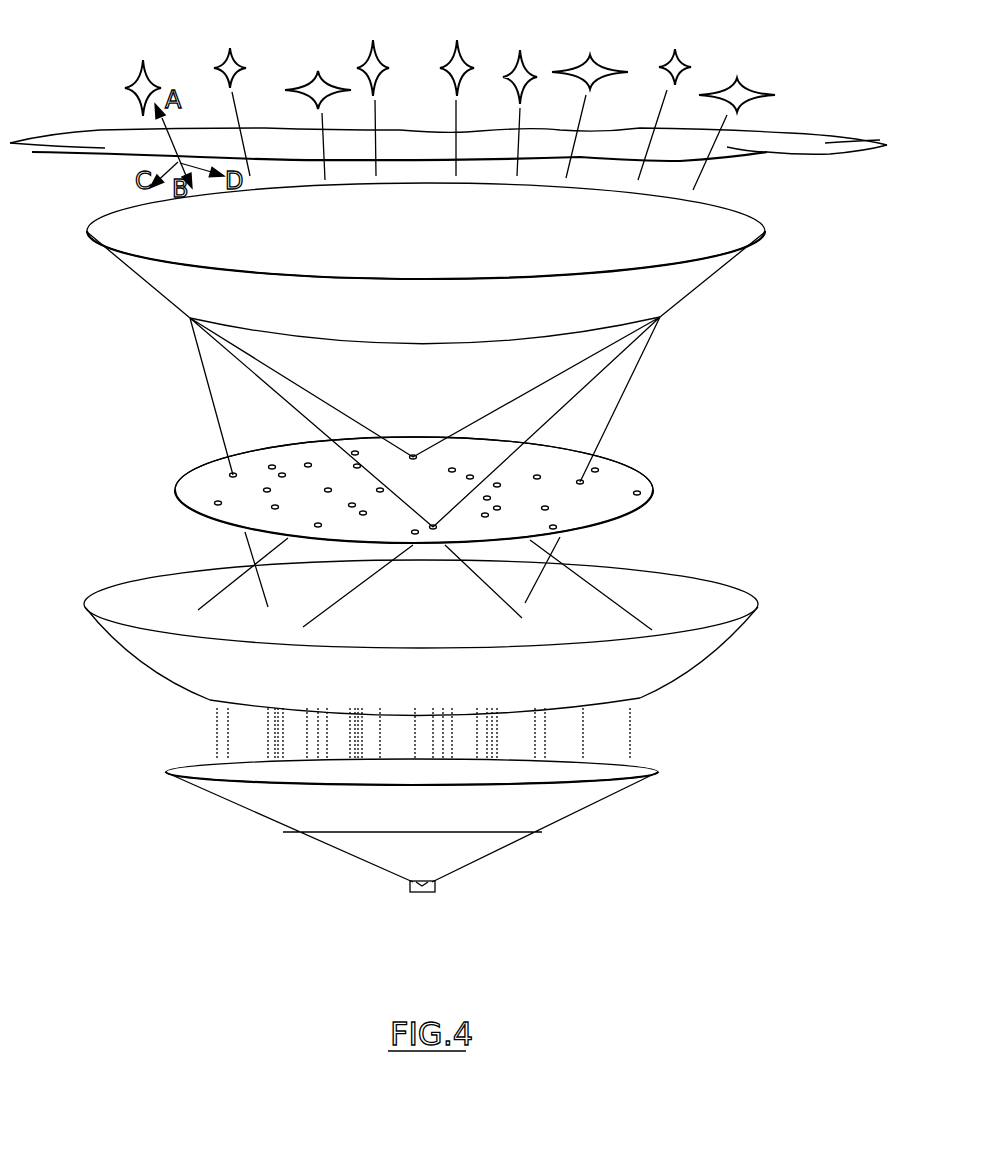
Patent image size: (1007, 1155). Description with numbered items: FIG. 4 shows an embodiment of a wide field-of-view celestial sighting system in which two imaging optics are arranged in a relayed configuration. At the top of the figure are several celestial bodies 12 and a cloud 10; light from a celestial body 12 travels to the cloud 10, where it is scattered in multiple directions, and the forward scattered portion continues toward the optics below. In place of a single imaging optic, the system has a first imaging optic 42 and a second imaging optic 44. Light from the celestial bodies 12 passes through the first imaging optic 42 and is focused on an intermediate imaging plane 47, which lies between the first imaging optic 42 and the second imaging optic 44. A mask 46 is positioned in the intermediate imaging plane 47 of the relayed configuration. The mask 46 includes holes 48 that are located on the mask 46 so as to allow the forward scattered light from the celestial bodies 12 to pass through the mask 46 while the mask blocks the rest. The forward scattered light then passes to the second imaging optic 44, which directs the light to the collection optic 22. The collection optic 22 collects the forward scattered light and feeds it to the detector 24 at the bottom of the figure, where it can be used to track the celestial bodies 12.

The cloud 10 is at (64, 137).
The celestial body 12 is at (230, 56).
The first imaging optic 42 is at (167, 282).
The second imaging optic 44 is at (130, 607).
The mask 46 is at (185, 484).
The intermediate imaging plane 47 is at (618, 511).
The holes 48 is at (308, 465).
The collection optic 22 is at (250, 803).
The detector 24 is at (408, 884).